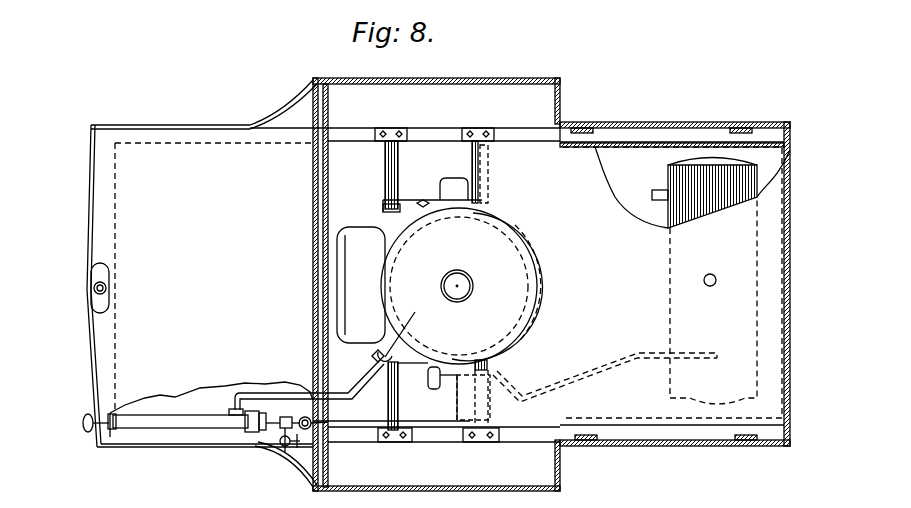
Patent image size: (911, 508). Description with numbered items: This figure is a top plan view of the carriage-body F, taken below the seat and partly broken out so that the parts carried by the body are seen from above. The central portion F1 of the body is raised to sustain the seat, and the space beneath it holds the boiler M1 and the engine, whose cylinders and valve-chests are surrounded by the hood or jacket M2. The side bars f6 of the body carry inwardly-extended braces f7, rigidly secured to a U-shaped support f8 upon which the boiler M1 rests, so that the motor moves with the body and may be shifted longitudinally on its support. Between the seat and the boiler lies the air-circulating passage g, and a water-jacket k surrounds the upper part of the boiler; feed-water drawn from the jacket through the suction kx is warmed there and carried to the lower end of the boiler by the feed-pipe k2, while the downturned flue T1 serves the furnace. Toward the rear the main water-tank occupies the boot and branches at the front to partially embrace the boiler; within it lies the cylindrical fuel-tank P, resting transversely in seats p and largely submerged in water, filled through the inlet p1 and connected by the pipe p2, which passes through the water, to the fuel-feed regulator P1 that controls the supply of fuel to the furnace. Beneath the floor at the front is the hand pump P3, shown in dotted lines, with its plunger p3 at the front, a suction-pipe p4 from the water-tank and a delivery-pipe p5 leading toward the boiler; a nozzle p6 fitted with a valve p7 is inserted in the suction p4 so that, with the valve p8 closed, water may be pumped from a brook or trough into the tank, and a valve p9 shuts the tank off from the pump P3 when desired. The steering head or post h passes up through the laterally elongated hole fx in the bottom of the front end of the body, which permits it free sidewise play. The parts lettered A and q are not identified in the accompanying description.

The carriage-body F is at (192, 126).
The central portion of the body F1 is at (512, 78).
The side bars f6 is at (512, 128).
The inwardly-extended braces f7 is at (472, 150).
The downturned flue T1 is at (462, 190).
The water-jacket k is at (532, 212).
The air-circulating passage g is at (314, 190).
The support f8 is at (395, 205).
The boiler M1 is at (385, 238).
The hood or jacket M2 is at (340, 277).
The suction kx is at (406, 334).
The valve p8 is at (376, 360).
The feed-pipe k2 is at (427, 379).
The fuel-feed regulator P1 is at (500, 372).
The pipe p2 is at (578, 385).
The suction-pipe p4 is at (367, 428).
The seats p is at (668, 205).
The chamber A is at (607, 183).
The fuel-tank P is at (745, 180).
The inlet p1 is at (706, 285).
The hole fx is at (108, 290).
The steering head or post h is at (108, 291).
The hand-pump plunger p3 is at (83, 424).
The pump P3 is at (177, 430).
The delivery-pipe p5 is at (243, 394).
The valve p9 is at (296, 415).
The nozzle p6 is at (271, 451).
The valve p7 is at (300, 430).
The curved bottom plate q is at (293, 498).